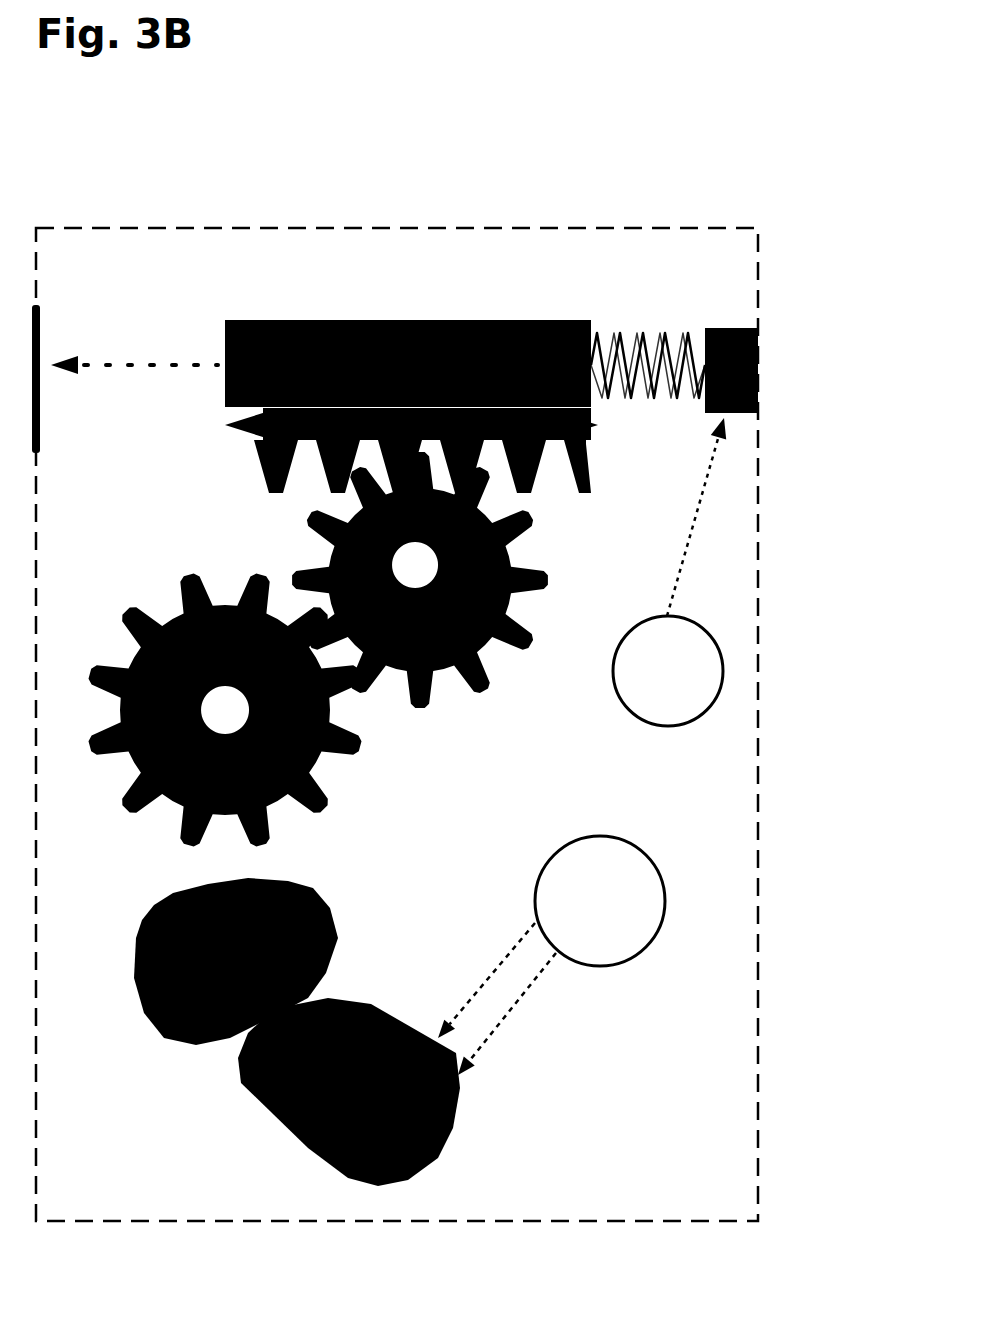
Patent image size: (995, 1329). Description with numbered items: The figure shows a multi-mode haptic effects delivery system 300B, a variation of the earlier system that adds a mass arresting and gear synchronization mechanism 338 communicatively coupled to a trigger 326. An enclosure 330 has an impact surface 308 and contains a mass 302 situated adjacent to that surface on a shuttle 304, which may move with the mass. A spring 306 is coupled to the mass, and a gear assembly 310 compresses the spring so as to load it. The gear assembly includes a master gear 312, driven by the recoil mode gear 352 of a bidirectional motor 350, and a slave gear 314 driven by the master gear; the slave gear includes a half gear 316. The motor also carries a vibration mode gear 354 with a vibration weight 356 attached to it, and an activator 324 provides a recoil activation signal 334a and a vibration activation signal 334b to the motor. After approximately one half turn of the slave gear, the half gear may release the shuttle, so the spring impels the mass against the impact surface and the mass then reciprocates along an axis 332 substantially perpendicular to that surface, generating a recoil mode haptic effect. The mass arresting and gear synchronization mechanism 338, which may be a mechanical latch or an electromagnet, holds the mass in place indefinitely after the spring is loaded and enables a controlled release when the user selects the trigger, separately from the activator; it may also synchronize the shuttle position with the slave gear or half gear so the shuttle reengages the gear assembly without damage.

The multi-mode haptic effects delivery system 300B is at (756, 188).
The mass 302 is at (408, 363).
The shuttle 304 is at (250, 460).
The spring 306 is at (653, 398).
The impact surface 308 is at (35, 410).
The gear assembly 310 is at (218, 536).
The master gear 312 is at (305, 758).
The slave gear 314 is at (520, 552).
The half gear 316 is at (498, 607).
The activator 324 is at (583, 960).
The trigger 326 is at (660, 718).
The enclosure 330 is at (286, 220).
The axis 332 is at (576, 432).
The recoil activation signal 334a is at (470, 984).
The vibration activation signal 334b is at (484, 1036).
The mass arresting and gear synchronization mechanism 338 is at (706, 320).
The bidirectional motor 350 is at (446, 1112).
The recoil mode gear 352 is at (164, 808).
The vibration mode gear 354 is at (286, 878).
The vibration weight 356 is at (340, 928).